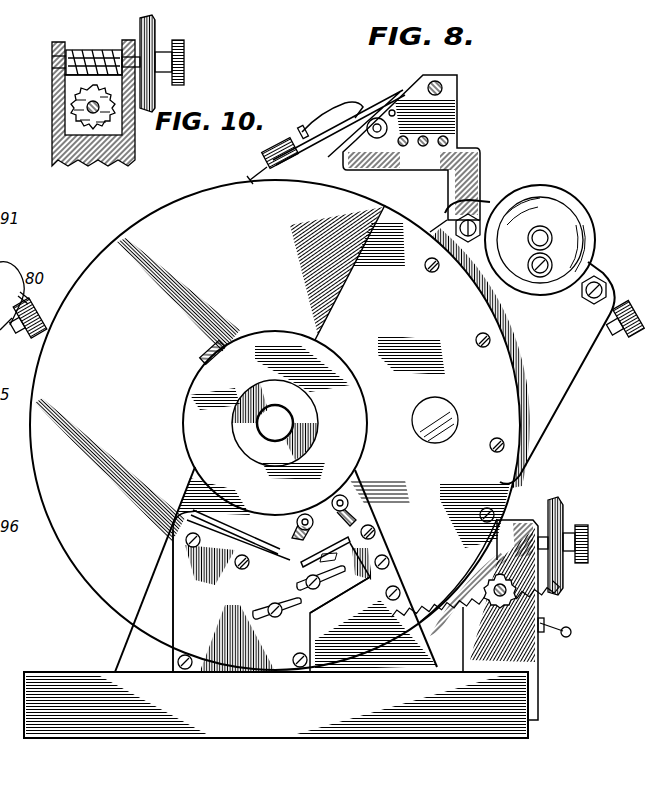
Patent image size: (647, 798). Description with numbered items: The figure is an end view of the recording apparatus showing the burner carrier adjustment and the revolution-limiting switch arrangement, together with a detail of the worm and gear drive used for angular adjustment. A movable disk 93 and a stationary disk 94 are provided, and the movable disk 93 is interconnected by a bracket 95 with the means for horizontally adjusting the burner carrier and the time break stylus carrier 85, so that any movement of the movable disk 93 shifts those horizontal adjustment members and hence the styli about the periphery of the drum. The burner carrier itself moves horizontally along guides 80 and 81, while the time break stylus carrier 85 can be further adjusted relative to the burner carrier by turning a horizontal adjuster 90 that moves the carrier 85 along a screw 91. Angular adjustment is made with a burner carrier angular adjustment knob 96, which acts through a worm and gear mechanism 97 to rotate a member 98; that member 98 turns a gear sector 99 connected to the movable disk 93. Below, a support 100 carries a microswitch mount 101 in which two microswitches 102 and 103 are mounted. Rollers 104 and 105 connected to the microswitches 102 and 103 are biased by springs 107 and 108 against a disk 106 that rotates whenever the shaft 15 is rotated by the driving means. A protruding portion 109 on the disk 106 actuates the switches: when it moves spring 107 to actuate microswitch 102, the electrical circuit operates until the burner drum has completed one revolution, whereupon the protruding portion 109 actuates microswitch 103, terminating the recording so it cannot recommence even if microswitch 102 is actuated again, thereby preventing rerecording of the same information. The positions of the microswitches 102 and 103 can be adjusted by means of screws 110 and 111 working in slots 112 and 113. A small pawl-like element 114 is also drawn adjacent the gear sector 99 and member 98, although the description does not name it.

In FIG. 8, the shaft 15 is at (275, 423).
In FIG. 8, the guide 80 is at (600, 284).
In FIG. 8, the guide 81 is at (474, 220).
In FIG. 8, the time break stylus carrier 85 is at (473, 168).
In FIG. 8, the horizontal adjuster 90 is at (542, 275).
In FIG. 8, the screw 91 is at (545, 236).
In FIG. 8, the movable disk 93 is at (244, 256).
In FIG. 8, the stationary disk 94 is at (492, 406).
In FIG. 8, the bracket 95 is at (570, 378).
In FIG. 10, the burner carrier angular adjustment knob 96 is at (184, 62).
In FIG. 8, the burner carrier angular adjustment knob 96 is at (592, 536).
In FIG. 10, the worm and gear mechanism 97 is at (98, 50).
In FIG. 10, the member 98 is at (66, 106).
In FIG. 8, the member 98 is at (512, 592).
In FIG. 8, the gear sector 99 is at (487, 560).
In FIG. 8, the support 100 is at (68, 684).
In FIG. 8, the microswitch mount 101 is at (185, 584).
In FIG. 8, the microswitch 102 is at (352, 541).
In FIG. 8, the microswitch 103 is at (272, 557).
In FIG. 8, the roller 104 is at (350, 505).
In FIG. 8, the roller 105 is at (303, 515).
In FIG. 8, the disk 106 is at (196, 446).
In FIG. 8, the spring 107 is at (376, 530).
In FIG. 8, the spring 108 is at (270, 520).
In FIG. 8, the protruding portion 109 is at (205, 352).
In FIG. 8, the screw 110 is at (318, 600).
In FIG. 8, the screw 111 is at (270, 616).
In FIG. 8, the slot 112 is at (345, 588).
In FIG. 8, the slot 113 is at (262, 612).
In FIG. 8, the pawl 114 is at (553, 634).